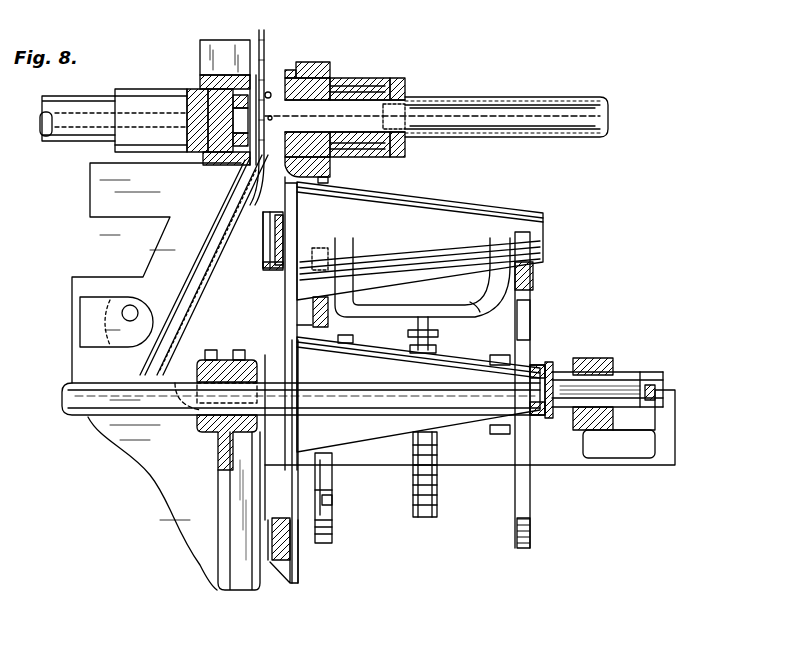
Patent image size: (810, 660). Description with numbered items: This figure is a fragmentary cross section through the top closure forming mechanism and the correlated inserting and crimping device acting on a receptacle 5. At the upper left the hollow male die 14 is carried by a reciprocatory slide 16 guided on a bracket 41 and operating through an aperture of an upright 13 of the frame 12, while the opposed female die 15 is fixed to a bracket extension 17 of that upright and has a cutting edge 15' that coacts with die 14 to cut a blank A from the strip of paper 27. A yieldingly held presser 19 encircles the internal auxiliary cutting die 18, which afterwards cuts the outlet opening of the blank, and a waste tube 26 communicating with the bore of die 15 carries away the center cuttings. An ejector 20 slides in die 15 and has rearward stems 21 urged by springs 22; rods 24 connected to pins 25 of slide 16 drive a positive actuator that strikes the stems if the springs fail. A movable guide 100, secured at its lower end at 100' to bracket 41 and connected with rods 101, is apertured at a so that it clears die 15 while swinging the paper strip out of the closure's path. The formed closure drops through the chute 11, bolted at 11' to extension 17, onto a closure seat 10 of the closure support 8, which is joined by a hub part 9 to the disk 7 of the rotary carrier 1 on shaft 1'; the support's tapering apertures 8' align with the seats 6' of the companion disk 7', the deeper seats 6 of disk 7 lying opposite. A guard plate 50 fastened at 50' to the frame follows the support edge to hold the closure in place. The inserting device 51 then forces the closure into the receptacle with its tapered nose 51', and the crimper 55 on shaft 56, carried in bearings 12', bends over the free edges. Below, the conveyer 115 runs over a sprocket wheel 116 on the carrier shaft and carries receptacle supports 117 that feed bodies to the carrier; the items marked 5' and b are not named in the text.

The rotary carrier 1 is at (541, 390).
The carrier shaft 1' is at (481, 408).
The receptacle 5 is at (420, 336).
The drum post 5' is at (543, 533).
The seat 6 is at (412, 388).
The seat 6' is at (543, 272).
The carrier disk 7 is at (333, 320).
The carrier disk 7' is at (540, 320).
The closure support 8 is at (289, 441).
The tapering aperture 8' is at (303, 545).
The hub part 9 is at (300, 330).
The closure seat 10 is at (284, 570).
The chute 11 is at (309, 323).
The bolt 11' is at (358, 183).
The frame 12 is at (234, 533).
The bearing 12' is at (606, 378).
The upright 13 is at (230, 56).
The male cutting and forming die 14 is at (230, 75).
The female cutting and forming die 15 is at (432, 91).
The cutting edge 15' is at (296, 51).
The reciprocatory slide 16 is at (135, 100).
The bracket extension 17 is at (352, 78).
The auxiliary cutting die 18 is at (195, 152).
The presser 19 is at (238, 165).
The ejector 20 is at (330, 166).
The ejector stem 21 is at (390, 82).
The spring 22 is at (330, 72).
The rod 24 is at (44, 136).
The pin 25 is at (405, 97).
The waste tube 26 is at (528, 98).
The strip of paper 27 is at (264, 43).
The bracket 41 is at (145, 455).
The guard plate 50 is at (254, 282).
The fastening 50' is at (225, 344).
The inserting device 51 is at (301, 385).
The tapered nose 51' is at (510, 390).
The crimper 55 is at (551, 366).
The crimper shaft 56 is at (627, 380).
The movable guide 100 is at (257, 243).
The fastening 100' is at (227, 386).
The rod 101 is at (50, 97).
The conveyer 115 is at (413, 497).
The sprocket wheel 116 is at (493, 434).
The receptacle support 117 is at (497, 355).
The blank A is at (515, 415).
The aperture a is at (268, 92).
The reference point b is at (273, 117).